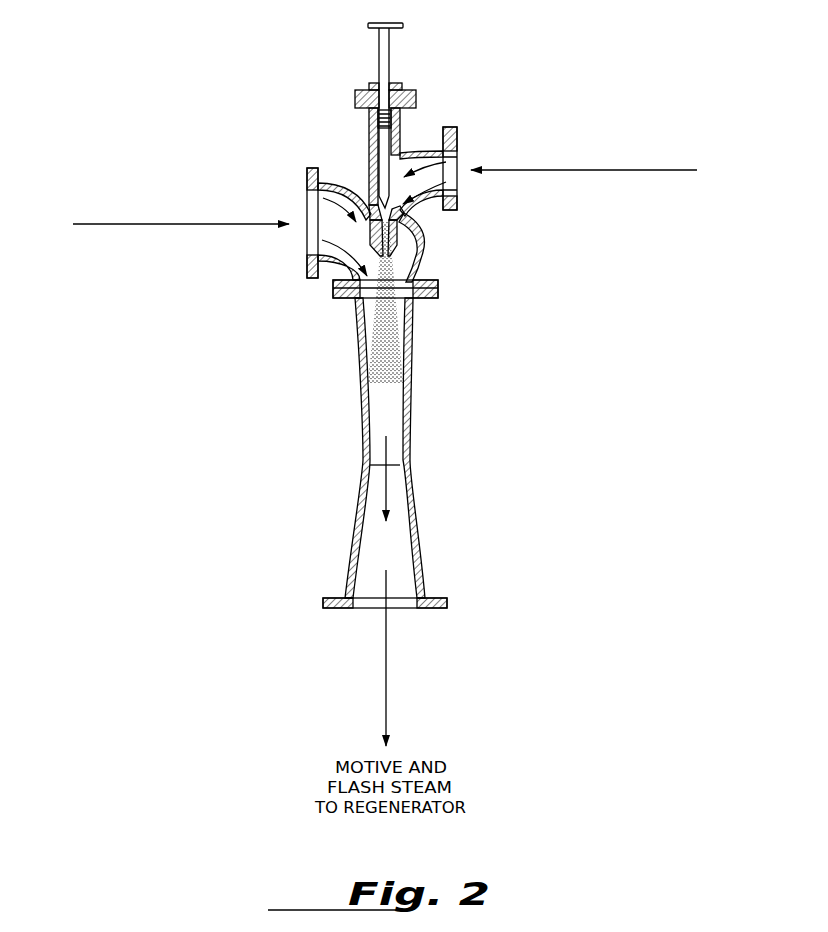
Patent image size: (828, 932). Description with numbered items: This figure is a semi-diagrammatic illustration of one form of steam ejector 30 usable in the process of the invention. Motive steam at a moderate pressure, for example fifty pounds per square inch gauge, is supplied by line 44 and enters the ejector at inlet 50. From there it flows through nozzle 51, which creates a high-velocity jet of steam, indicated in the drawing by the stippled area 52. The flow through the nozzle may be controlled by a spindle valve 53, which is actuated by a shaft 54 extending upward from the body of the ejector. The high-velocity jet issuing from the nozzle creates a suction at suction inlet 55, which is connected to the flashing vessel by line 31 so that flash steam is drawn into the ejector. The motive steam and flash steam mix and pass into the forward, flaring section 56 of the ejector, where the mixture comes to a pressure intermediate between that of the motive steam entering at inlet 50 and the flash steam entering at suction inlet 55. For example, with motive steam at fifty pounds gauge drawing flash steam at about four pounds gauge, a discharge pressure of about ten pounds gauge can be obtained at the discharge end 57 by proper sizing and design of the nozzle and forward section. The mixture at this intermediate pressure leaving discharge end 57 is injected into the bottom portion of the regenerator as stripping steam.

The steam ejector 30 is at (336, 417).
The line 31 is at (103, 226).
The motive steam line 44 is at (670, 170).
The inlet 50 is at (461, 160).
The nozzle 51 is at (398, 239).
The high-velocity jet of steam 52 is at (388, 355).
The spindle valve 53 is at (378, 213).
The shaft 54 is at (387, 152).
The suction inlet 55 is at (306, 245).
The forward flaring section 56 is at (415, 505).
The discharge end 57 is at (400, 590).